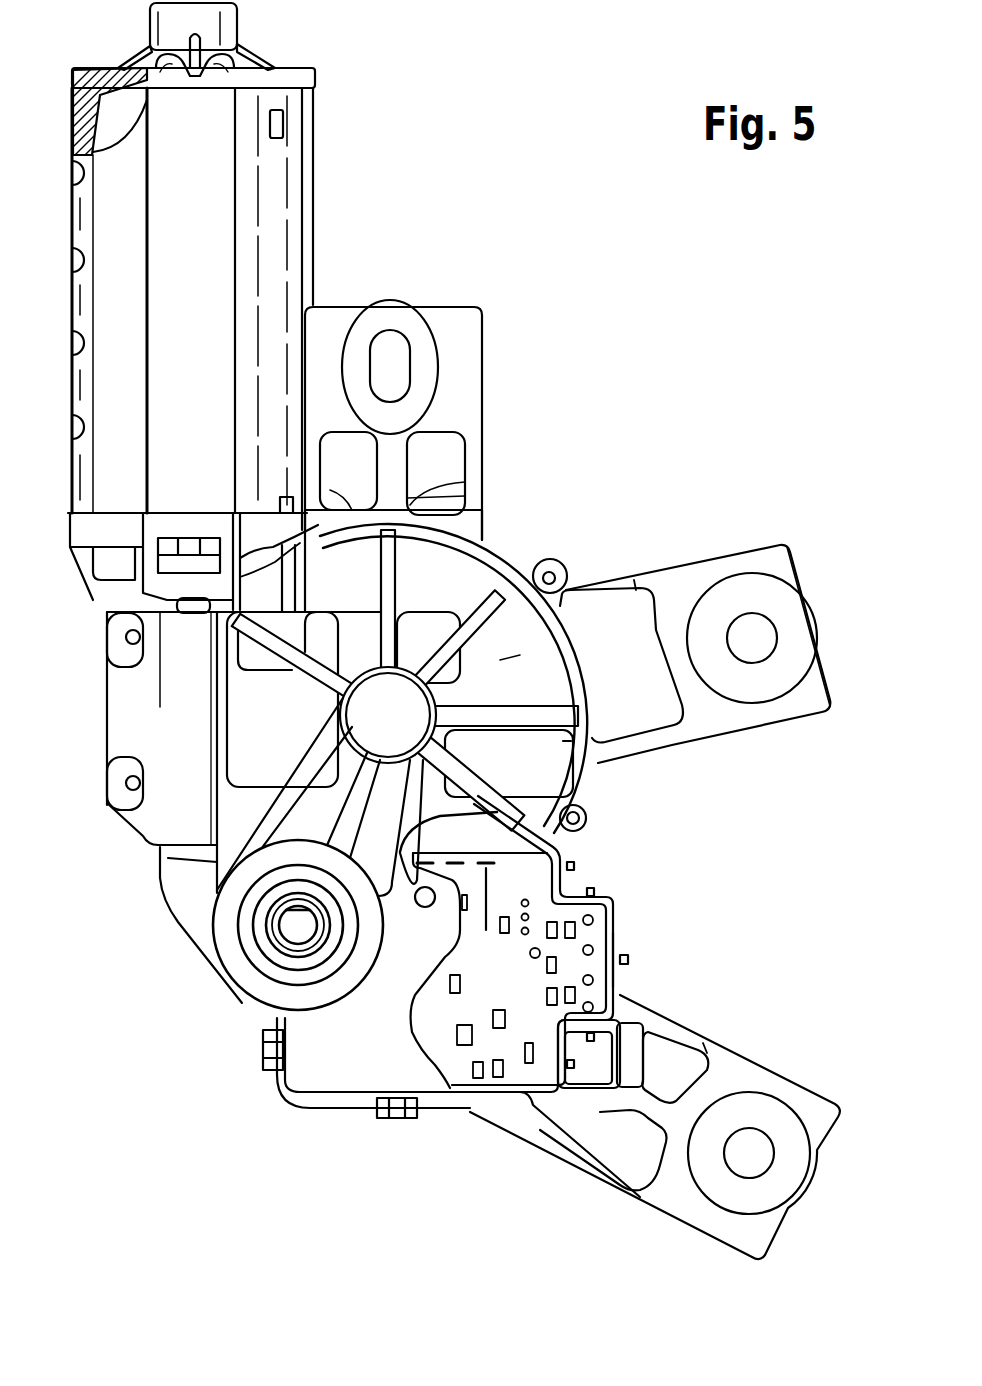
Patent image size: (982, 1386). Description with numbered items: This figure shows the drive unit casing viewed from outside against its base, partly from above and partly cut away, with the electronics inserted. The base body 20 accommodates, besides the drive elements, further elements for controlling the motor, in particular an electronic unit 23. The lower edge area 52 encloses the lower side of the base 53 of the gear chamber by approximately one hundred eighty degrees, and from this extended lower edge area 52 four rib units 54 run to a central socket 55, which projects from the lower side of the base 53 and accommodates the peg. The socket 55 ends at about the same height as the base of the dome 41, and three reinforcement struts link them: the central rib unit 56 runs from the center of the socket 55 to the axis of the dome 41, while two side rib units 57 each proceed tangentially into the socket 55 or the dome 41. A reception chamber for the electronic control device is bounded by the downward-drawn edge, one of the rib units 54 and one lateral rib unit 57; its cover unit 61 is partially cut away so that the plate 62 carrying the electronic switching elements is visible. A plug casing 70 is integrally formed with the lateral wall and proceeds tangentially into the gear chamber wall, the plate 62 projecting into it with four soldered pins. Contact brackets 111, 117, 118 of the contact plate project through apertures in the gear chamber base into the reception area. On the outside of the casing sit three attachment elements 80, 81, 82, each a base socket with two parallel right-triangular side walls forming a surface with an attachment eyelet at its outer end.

The base body 20 is at (447, 710).
The electronic unit 23 is at (564, 944).
The dome 41 is at (271, 931).
The lower edge area 52 is at (431, 505).
The base 53 is at (571, 590).
The rib units 54 is at (446, 680).
The central socket 55 is at (445, 714).
The central rib unit 56 is at (284, 794).
The side rib units 57 is at (359, 789).
The cover unit 61 is at (451, 1025).
The plate 62 is at (503, 1017).
The plug casing 70 is at (670, 944).
The attachment element 80 is at (655, 1116).
The attachment element 81 is at (721, 627).
The attachment element 82 is at (434, 420).
The contact bracket 111 is at (412, 920).
The contact bracket 117 is at (469, 795).
The contact bracket 118 is at (483, 920).